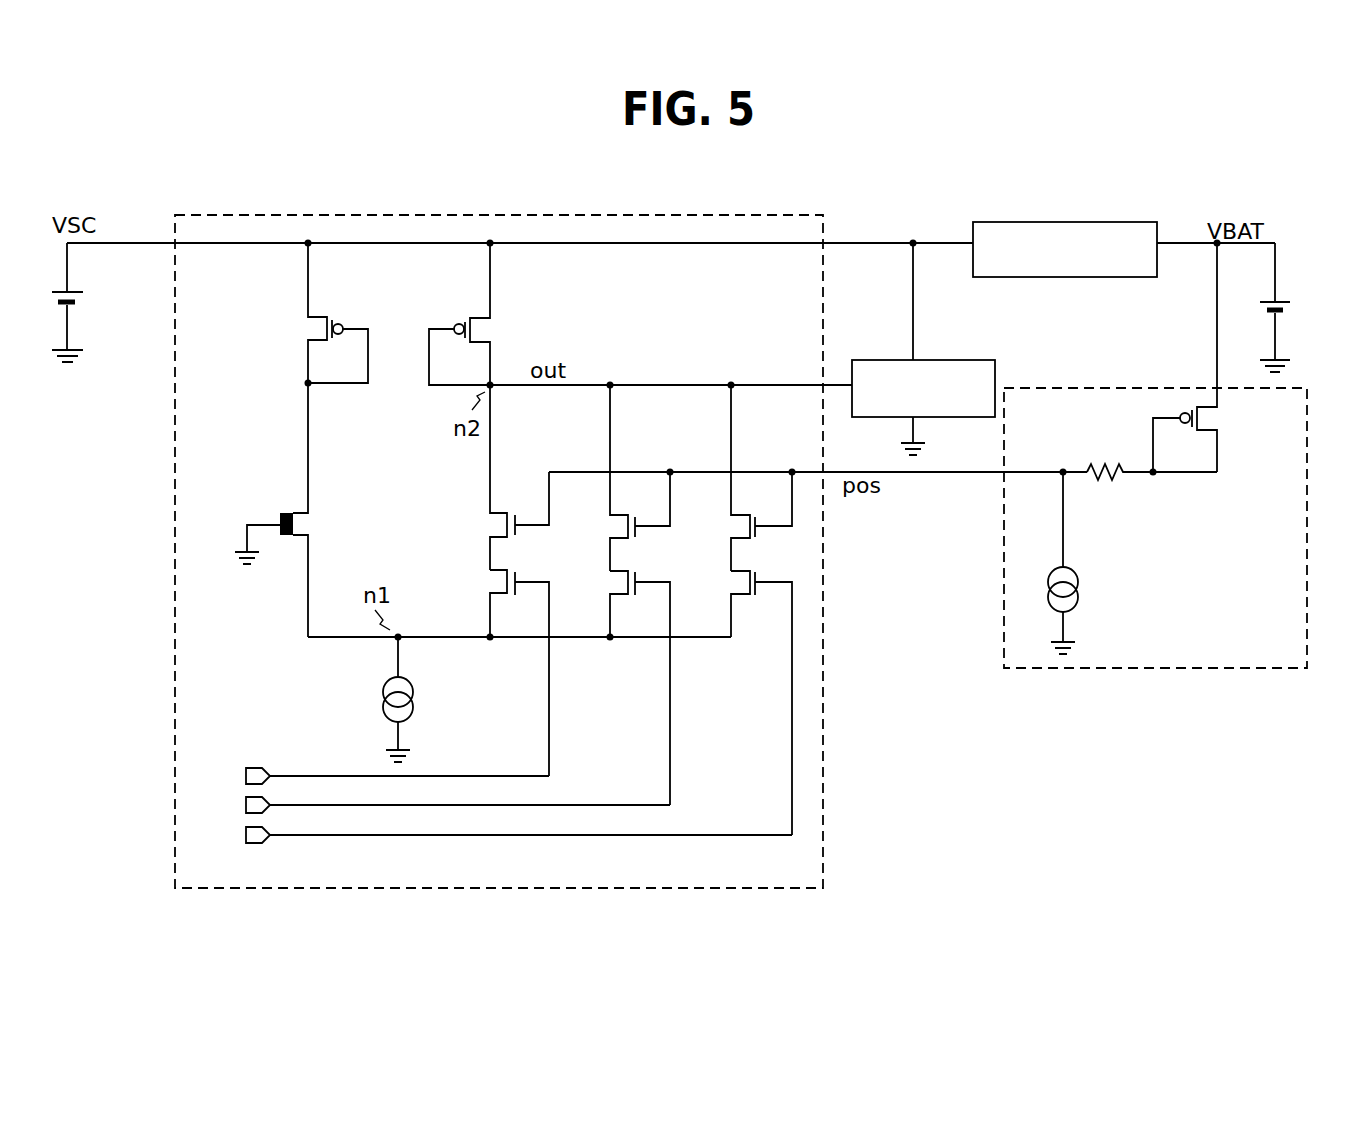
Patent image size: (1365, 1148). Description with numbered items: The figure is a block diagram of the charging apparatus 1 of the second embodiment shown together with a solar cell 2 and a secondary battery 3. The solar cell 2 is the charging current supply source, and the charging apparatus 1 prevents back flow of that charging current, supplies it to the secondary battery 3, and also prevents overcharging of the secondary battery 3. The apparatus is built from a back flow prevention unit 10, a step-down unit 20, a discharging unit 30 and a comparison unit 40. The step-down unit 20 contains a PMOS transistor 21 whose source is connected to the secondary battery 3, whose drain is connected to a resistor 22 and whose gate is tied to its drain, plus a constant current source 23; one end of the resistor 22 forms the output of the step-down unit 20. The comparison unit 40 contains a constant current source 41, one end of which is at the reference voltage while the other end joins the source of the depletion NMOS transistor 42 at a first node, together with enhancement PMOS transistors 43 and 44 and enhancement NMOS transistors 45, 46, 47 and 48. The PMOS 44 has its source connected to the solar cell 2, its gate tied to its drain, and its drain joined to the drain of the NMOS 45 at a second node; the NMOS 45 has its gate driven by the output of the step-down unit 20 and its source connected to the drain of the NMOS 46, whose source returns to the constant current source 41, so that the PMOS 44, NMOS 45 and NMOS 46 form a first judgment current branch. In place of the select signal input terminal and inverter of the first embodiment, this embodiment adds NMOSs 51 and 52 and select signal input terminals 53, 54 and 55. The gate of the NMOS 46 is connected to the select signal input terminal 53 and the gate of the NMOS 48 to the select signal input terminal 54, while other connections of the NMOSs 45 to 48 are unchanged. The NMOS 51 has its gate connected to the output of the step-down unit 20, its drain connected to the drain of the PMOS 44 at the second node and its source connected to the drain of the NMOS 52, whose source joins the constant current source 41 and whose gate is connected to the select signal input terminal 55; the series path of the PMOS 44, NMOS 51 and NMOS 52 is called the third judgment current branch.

The charging apparatus 1 is at (867, 172).
The solar cell 2 is at (81, 302).
The secondary battery 3 is at (1290, 307).
The back flow prevention unit 10 is at (1065, 224).
The step-down unit 20 is at (1178, 455).
The PMOS transistor 21 is at (1220, 357).
The resistor 22 is at (1087, 454).
The constant current source 23 is at (1092, 563).
The discharging unit 30 is at (923, 349).
The comparison unit 40 is at (520, 551).
The constant current source 41 is at (371, 699).
The depletion NMOS transistor 42 is at (260, 510).
The enhancement PMOS transistor 43 is at (305, 315).
The enhancement PMOS transistor 44 is at (493, 314).
The enhancement NMOS transistor 45 is at (485, 477).
The enhancement NMOS transistor 46 is at (485, 667).
The enhancement NMOS transistor 47 is at (619, 478).
The enhancement NMOS transistor 48 is at (619, 675).
The enhancement NMOS transistor 51 is at (741, 478).
The enhancement NMOS transistor 52 is at (741, 690).
The select signal input terminal 53 is at (368, 768).
The select signal input terminal 54 is at (428, 797).
The select signal input terminal 55 is at (489, 827).